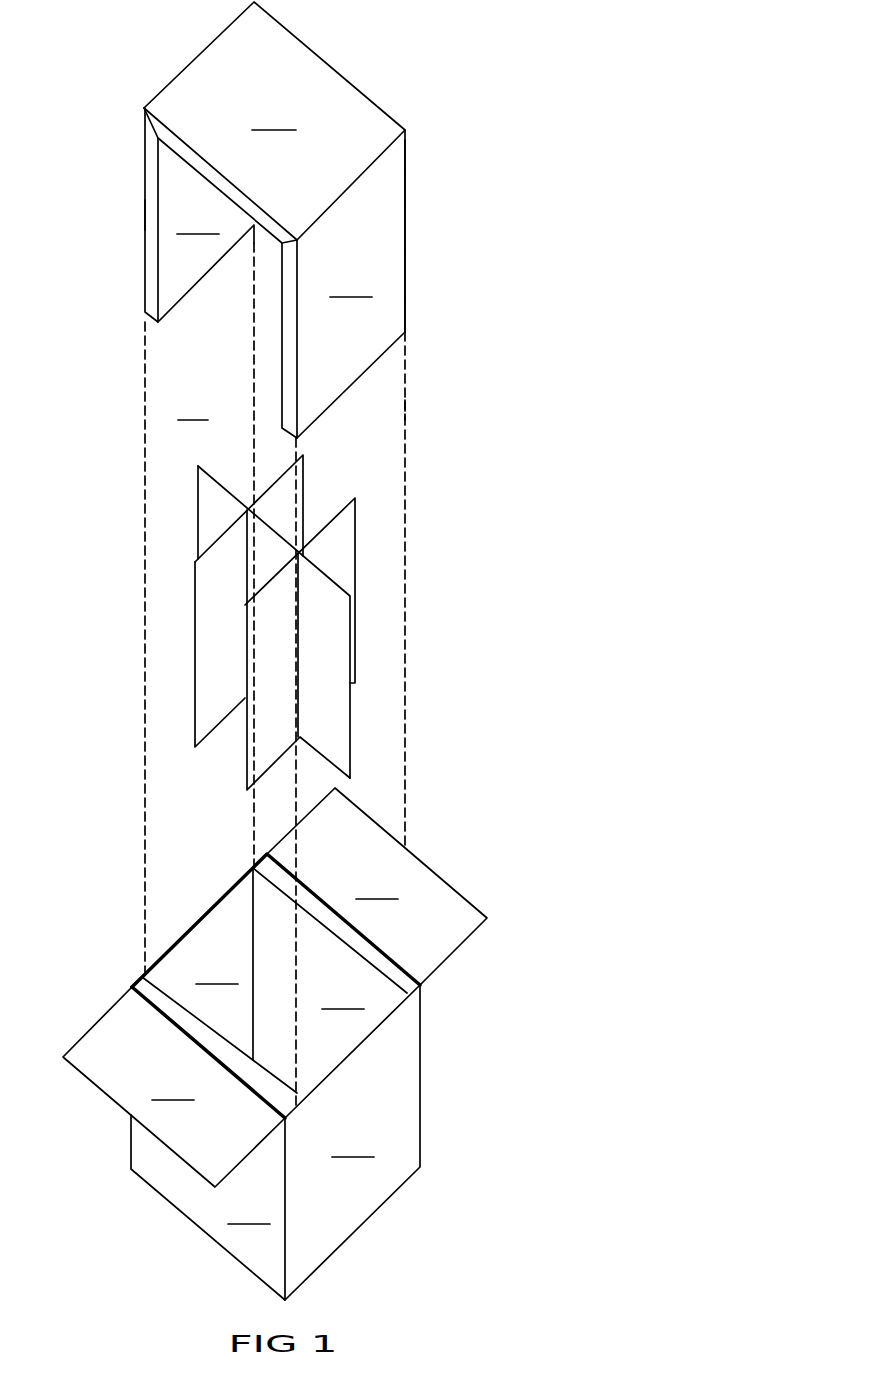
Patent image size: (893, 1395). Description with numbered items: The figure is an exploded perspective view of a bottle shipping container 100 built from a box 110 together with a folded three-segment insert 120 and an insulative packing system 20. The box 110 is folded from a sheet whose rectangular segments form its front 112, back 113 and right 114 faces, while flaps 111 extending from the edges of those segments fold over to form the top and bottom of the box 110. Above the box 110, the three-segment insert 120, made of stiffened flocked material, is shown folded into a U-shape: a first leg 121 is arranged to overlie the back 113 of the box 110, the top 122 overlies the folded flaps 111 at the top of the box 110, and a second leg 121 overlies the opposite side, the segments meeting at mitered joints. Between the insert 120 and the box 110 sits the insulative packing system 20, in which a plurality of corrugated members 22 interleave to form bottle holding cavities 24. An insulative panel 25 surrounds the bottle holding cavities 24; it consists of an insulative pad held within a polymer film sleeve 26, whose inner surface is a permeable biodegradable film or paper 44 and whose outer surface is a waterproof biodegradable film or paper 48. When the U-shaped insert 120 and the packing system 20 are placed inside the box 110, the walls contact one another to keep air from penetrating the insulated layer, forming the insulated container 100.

The container 100 is at (455, 408).
The box 110 is at (323, 1044).
The flaps 111 is at (487, 988).
The front 112 is at (352, 1142).
The back 113 is at (224, 964).
The right 114 is at (208, 1207).
The three-segment insert 120 is at (256, 540).
The leg 121 is at (147, 980).
The base 122 is at (277, 1078).
The insulative packing system 20 is at (275, 674).
The corrugated members 22 is at (213, 502).
The bottle holding cavities 24 is at (388, 185).
The insulative panel 25 is at (387, 157).
The polymer film sleeve 26 is at (397, 220).
The inner biodegradable film or paper 44 is at (397, 281).
The outer biodegradable film or paper 48 is at (392, 323).